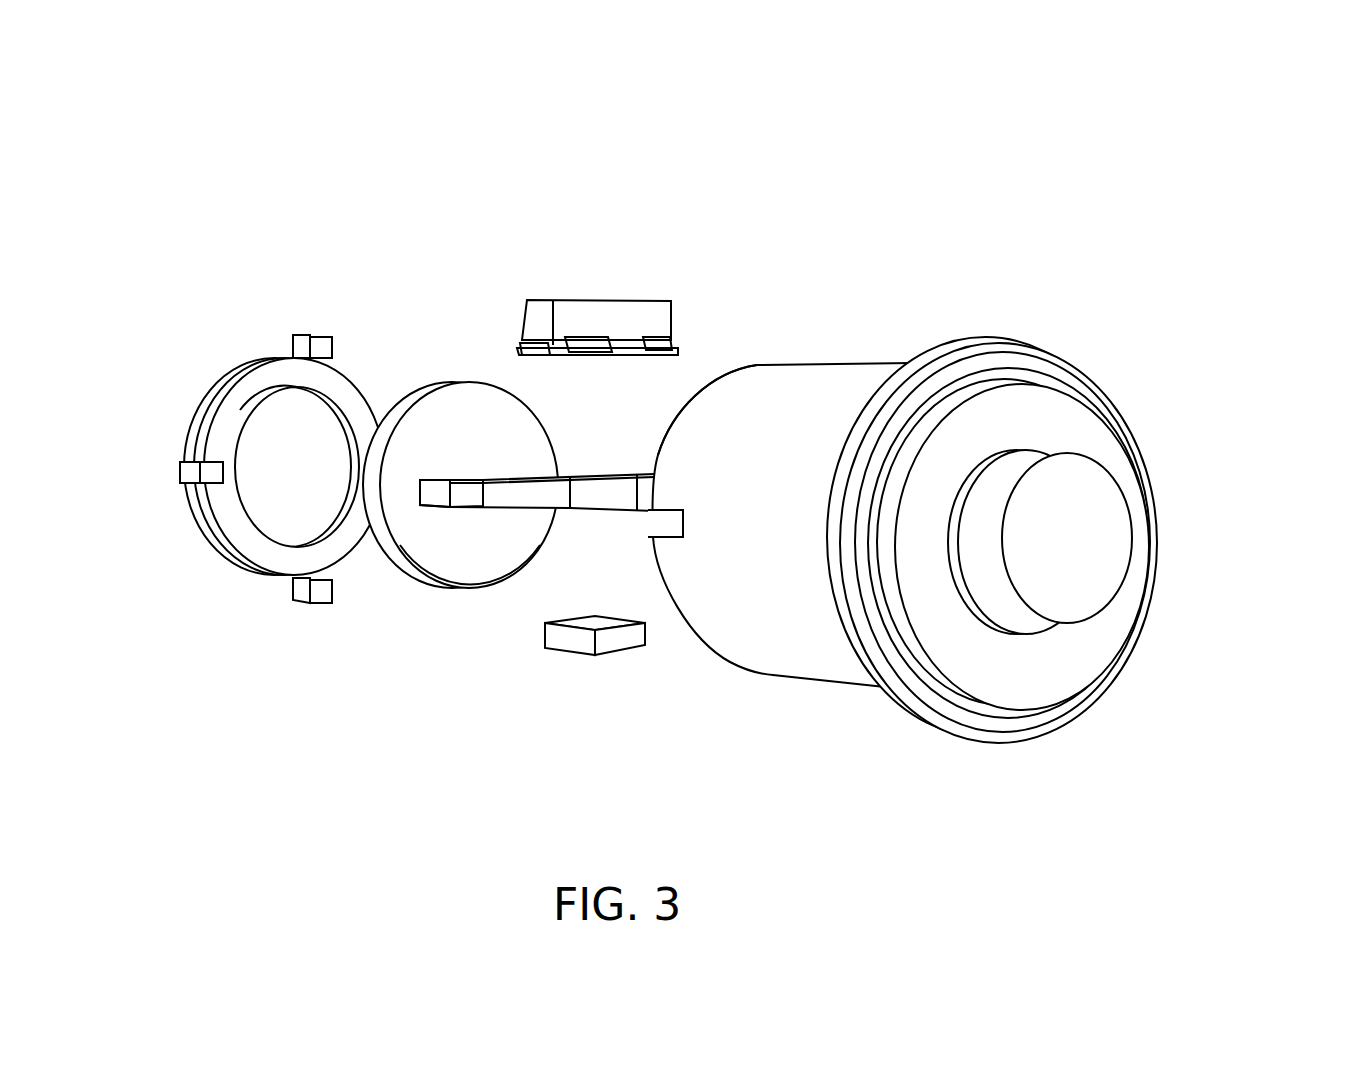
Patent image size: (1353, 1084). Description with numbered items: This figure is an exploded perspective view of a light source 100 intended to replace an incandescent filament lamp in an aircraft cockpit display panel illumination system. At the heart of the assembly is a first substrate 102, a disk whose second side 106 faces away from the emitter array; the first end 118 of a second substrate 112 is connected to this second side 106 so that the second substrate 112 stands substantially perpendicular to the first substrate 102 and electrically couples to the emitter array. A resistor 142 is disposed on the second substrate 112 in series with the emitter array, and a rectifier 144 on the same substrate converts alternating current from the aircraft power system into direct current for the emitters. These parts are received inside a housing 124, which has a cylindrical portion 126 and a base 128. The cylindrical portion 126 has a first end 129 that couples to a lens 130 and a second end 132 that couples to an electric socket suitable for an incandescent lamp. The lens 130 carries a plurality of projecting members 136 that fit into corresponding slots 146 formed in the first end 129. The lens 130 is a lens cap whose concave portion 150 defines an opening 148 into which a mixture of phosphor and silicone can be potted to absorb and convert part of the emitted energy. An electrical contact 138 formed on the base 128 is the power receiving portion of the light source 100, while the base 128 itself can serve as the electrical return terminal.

The light source 100 is at (708, 426).
The first substrate 102 is at (460, 485).
The second side 106 is at (462, 577).
The second substrate 112 is at (551, 467).
The first end 118 is at (452, 480).
The housing 124 is at (974, 492).
The cylindrical portion 126 is at (790, 663).
The base 128 is at (1043, 362).
The first end 129 is at (727, 362).
The lens 130 is at (253, 449).
The second end 132 is at (1064, 531).
The projecting members 136 is at (322, 336).
The electrical contact 138 is at (1120, 567).
The resistor 142 is at (617, 643).
The rectifier 144 is at (623, 308).
The slots 146 is at (668, 522).
The opening 148 is at (280, 435).
The concave portion 150 is at (332, 418).